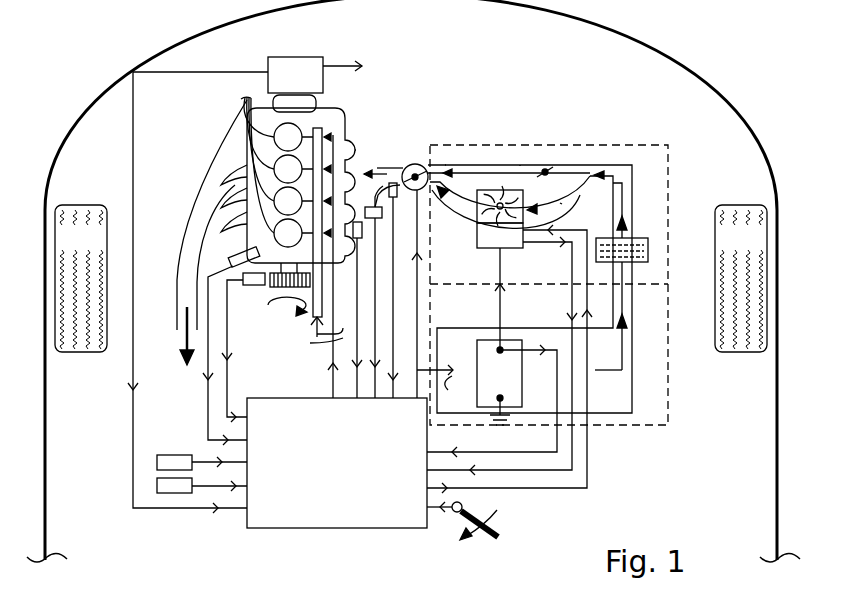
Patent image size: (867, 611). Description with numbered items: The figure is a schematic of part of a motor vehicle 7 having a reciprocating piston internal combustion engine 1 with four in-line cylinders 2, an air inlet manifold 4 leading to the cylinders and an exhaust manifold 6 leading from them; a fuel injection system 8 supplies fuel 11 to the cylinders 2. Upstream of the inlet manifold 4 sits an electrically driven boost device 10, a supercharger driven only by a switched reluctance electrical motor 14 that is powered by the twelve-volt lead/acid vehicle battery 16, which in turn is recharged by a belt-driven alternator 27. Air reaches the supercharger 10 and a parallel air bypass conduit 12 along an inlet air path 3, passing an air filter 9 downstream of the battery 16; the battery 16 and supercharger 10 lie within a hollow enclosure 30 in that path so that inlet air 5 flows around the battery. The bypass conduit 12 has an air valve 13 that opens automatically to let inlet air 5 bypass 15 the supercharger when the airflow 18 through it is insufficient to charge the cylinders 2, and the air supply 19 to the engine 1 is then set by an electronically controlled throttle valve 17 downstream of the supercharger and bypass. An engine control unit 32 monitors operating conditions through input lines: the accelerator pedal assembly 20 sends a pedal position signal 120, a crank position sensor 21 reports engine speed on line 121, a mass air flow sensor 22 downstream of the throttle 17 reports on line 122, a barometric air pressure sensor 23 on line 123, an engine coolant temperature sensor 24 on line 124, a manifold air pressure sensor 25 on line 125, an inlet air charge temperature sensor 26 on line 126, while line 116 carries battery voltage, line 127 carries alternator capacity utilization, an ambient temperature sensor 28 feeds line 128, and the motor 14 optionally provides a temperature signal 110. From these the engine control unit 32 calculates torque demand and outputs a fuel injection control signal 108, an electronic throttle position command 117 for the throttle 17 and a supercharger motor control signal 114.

The internal combustion engine 1 is at (229, 139).
The cylinders 2 is at (248, 160).
The inlet air path 3 is at (615, 165).
The air inlet manifold 4 is at (352, 128).
The inlet air 5 is at (688, 320).
The exhaust manifold 6 is at (198, 185).
The motor vehicle 7 is at (121, 63).
The fuel injection system 8 is at (306, 131).
The air filter 9 is at (648, 250).
The electrically driven boost device 10 is at (490, 186).
The fuel 11 is at (338, 322).
The air bypass conduit 12 is at (518, 170).
The air valve 13 is at (548, 172).
The switched reluctance electrical motor 14 is at (523, 246).
The bypass 15 is at (447, 165).
The vehicle battery 16 is at (507, 377).
The throttle valve 17 is at (423, 165).
The airflow 18 is at (558, 203).
The air supply 19 is at (383, 166).
The accelerator pedal assembly 20 is at (497, 509).
The crank position sensor 21 is at (250, 285).
The mass air flow sensor 22 is at (397, 165).
The barometric air pressure sensor 23 is at (157, 462).
The engine coolant temperature sensor 24 is at (233, 252).
The manifold air pressure sensor 25 is at (362, 232).
The inlet air charge temperature sensor 26 is at (382, 212).
The alternator 27 is at (290, 57).
The ambient temperature sensor 28 is at (173, 493).
The hollow enclosure 30 is at (668, 422).
The engine control unit 32 is at (343, 528).
The fuel injection control signal 108 is at (333, 384).
The temperature signal 110 is at (565, 473).
The supercharger motor control signal 114 is at (587, 483).
The battery voltage input line 116 is at (560, 440).
The electronic throttle position command 117 is at (417, 302).
The accelerator pedal position signal 120 is at (428, 508).
The crank position input line 121 is at (224, 398).
The mass air flow input line 122 is at (397, 275).
The barometric pressure input line 123 is at (215, 460).
The coolant temperature input line 124 is at (208, 398).
The manifold air pressure input line 125 is at (357, 358).
The air charge temperature input line 126 is at (310, 342).
The alternator input line 127 is at (137, 508).
The ambient temperature input line 128 is at (205, 486).